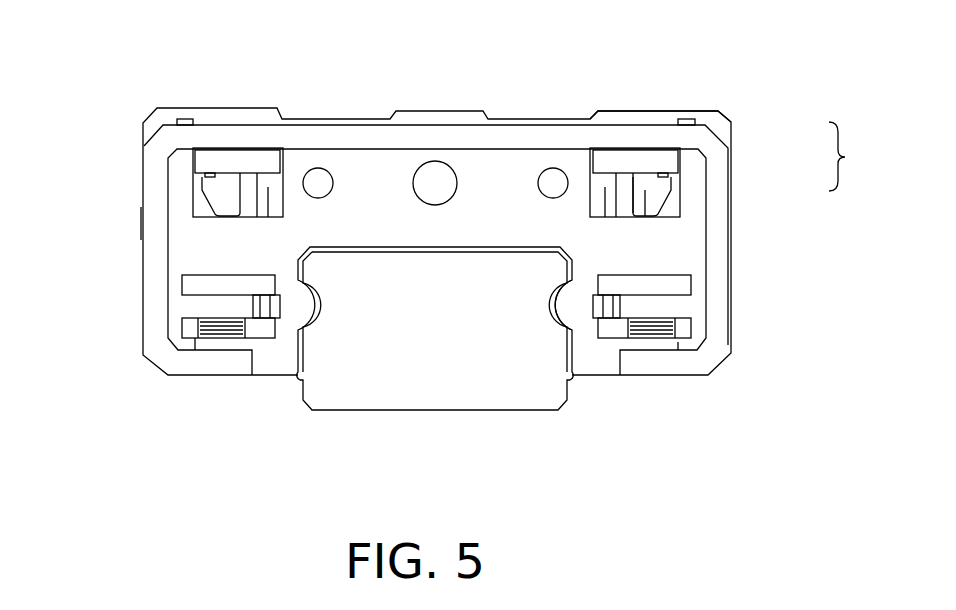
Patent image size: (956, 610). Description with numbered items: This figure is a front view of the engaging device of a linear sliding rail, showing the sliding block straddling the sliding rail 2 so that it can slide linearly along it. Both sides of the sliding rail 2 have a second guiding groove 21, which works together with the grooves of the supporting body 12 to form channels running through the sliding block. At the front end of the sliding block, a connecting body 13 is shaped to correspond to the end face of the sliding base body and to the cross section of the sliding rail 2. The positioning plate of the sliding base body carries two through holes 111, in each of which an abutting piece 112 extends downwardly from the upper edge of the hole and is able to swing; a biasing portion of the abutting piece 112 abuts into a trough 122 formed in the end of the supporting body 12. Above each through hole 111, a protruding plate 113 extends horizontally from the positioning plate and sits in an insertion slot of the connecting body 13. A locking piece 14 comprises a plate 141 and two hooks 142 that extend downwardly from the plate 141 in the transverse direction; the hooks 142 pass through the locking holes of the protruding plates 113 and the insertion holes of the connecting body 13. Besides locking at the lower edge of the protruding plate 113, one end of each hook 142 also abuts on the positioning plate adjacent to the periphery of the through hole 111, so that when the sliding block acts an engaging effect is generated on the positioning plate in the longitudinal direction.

The sliding rail 2 is at (486, 365).
The second guiding groove 21 is at (557, 305).
The supporting body 12 is at (150, 124).
The connecting body 13 is at (157, 263).
The locking piece 14 is at (735, 157).
The plate 141 is at (730, 127).
The hook 142 is at (662, 190).
The through hole 111 is at (667, 214).
The abutting piece 112 is at (625, 190).
The protruding plate 113 is at (668, 160).
The trough 122 is at (613, 204).